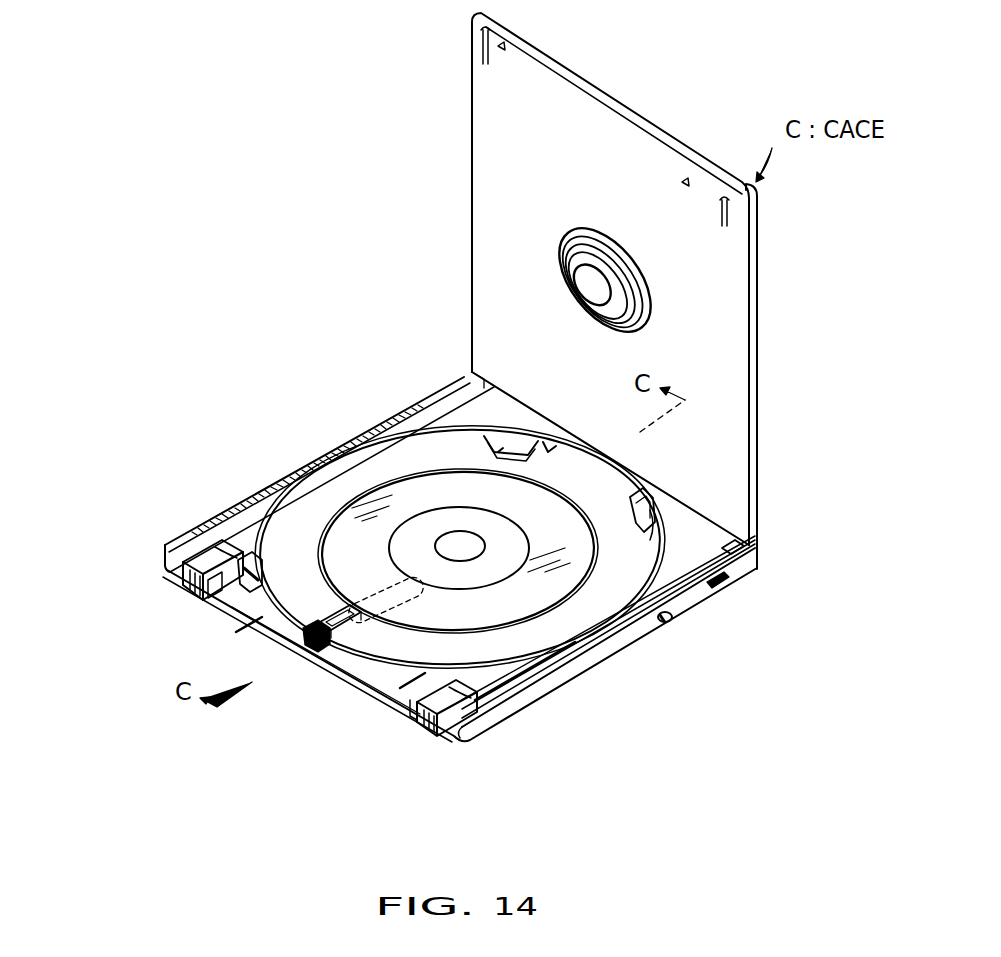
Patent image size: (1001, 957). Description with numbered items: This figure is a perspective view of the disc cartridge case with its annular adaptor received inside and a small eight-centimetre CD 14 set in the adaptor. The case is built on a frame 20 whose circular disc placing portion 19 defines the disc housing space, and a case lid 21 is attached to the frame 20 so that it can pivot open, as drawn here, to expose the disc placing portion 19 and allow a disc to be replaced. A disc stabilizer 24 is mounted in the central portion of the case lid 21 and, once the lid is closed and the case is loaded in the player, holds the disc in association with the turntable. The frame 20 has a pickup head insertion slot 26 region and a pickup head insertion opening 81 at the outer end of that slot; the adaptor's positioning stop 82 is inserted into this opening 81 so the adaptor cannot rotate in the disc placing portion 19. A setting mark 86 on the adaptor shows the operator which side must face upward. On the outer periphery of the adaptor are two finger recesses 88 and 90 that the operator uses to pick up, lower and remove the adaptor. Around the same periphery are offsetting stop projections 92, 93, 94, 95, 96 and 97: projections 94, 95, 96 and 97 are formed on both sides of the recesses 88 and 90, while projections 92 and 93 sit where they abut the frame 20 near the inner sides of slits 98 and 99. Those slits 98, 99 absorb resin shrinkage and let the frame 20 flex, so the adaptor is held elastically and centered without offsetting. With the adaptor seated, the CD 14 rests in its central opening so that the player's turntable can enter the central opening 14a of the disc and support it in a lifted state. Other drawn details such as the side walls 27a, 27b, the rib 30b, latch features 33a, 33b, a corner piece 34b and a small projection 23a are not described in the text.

The 8-cm CD 14 is at (560, 583).
The central opening 14a is at (445, 535).
The disc placing portion 19 is at (393, 440).
The frame 20 is at (740, 568).
The case lid 21 is at (650, 118).
The projection 23a is at (668, 622).
The disc stabilizer 24 is at (638, 318).
The pickup head insertion slot 26 is at (388, 628).
The side wall 27a is at (285, 482).
The side wall 27b is at (517, 715).
The rib 30b is at (540, 643).
The latch 33a is at (180, 553).
The latch 33b is at (453, 738).
The corner piece 34b is at (757, 558).
The pickup head insertion opening 81 is at (375, 632).
The positioning stop 82 is at (355, 622).
The setting mark 86 is at (330, 618).
The recess 88 is at (648, 520).
The recess 90 is at (510, 452).
The offsetting stop projection 92 is at (535, 683).
The offsetting stop projection 93 is at (240, 562).
The offsetting stop projection 94 is at (487, 440).
The offsetting stop projection 95 is at (545, 448).
The offsetting stop projection 96 is at (640, 515).
The offsetting stop projection 97 is at (710, 592).
The slit 98 is at (237, 635).
The slit 99 is at (408, 682).